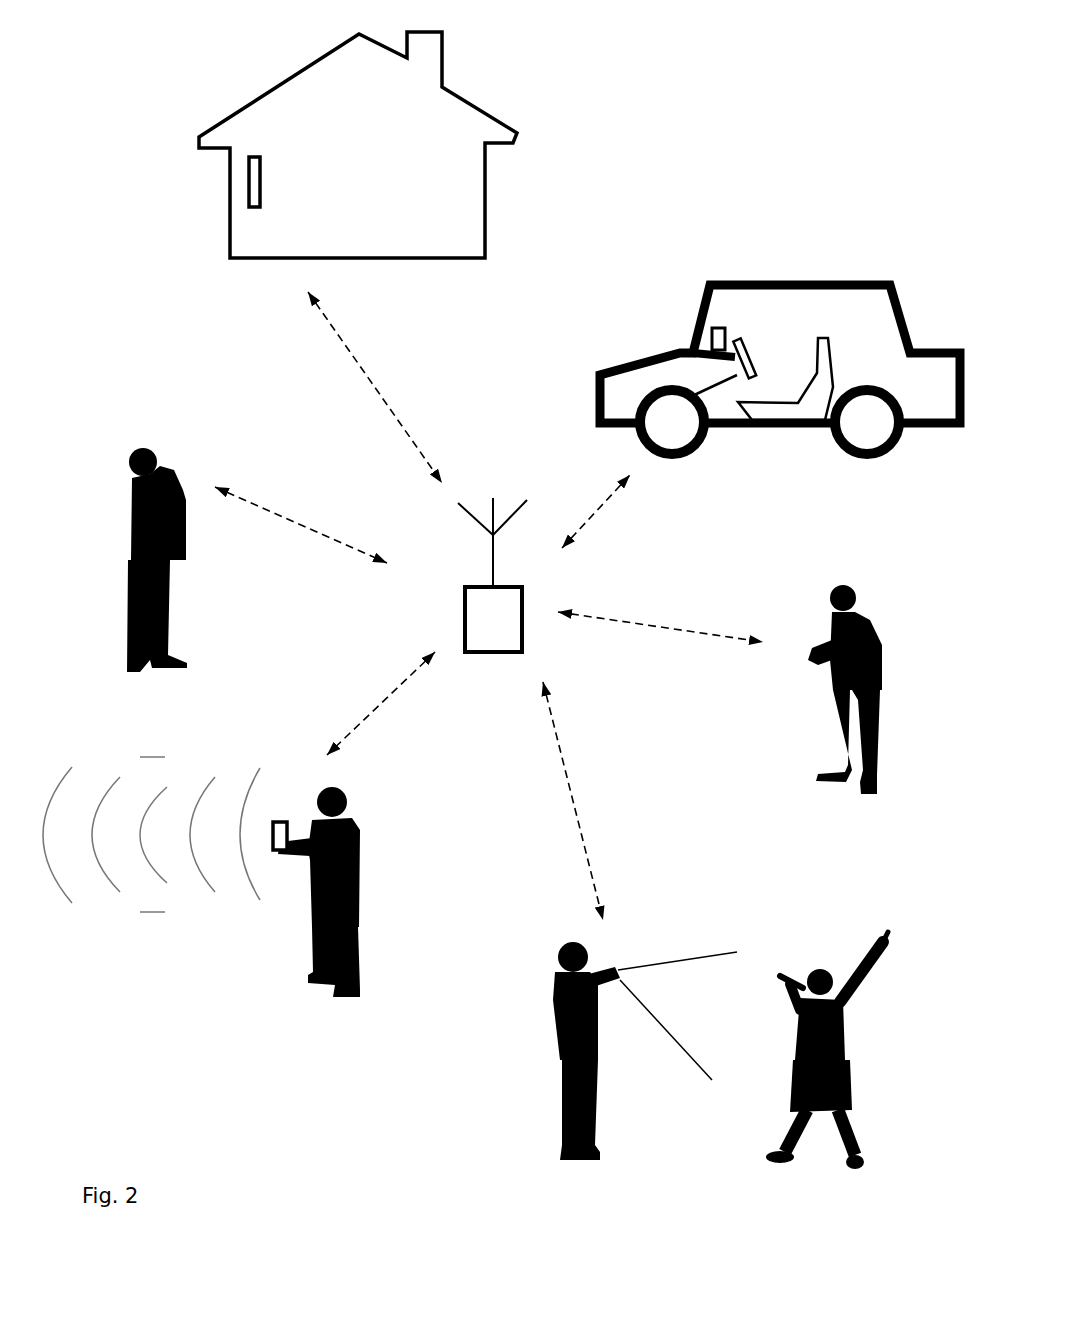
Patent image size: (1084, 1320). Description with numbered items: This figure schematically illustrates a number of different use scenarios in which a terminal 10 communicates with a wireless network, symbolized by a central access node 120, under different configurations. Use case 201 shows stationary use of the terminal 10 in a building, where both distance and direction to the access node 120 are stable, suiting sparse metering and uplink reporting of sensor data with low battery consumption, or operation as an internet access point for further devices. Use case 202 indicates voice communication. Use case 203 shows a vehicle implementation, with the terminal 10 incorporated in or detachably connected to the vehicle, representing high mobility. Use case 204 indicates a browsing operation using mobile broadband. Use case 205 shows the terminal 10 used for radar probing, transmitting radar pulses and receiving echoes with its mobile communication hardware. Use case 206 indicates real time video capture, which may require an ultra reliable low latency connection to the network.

The terminal 10 is at (252, 153).
The access node 120 is at (458, 598).
The use case (stationary use) 201 is at (332, 145).
The use case (voice communication) 202 is at (122, 560).
The use case (vehicle implementation) 203 is at (780, 350).
The use case (browsing operation) 204 is at (823, 689).
The use case (radar probing) 205 is at (201, 877).
The use case (real time video capture) 206 is at (606, 1051).